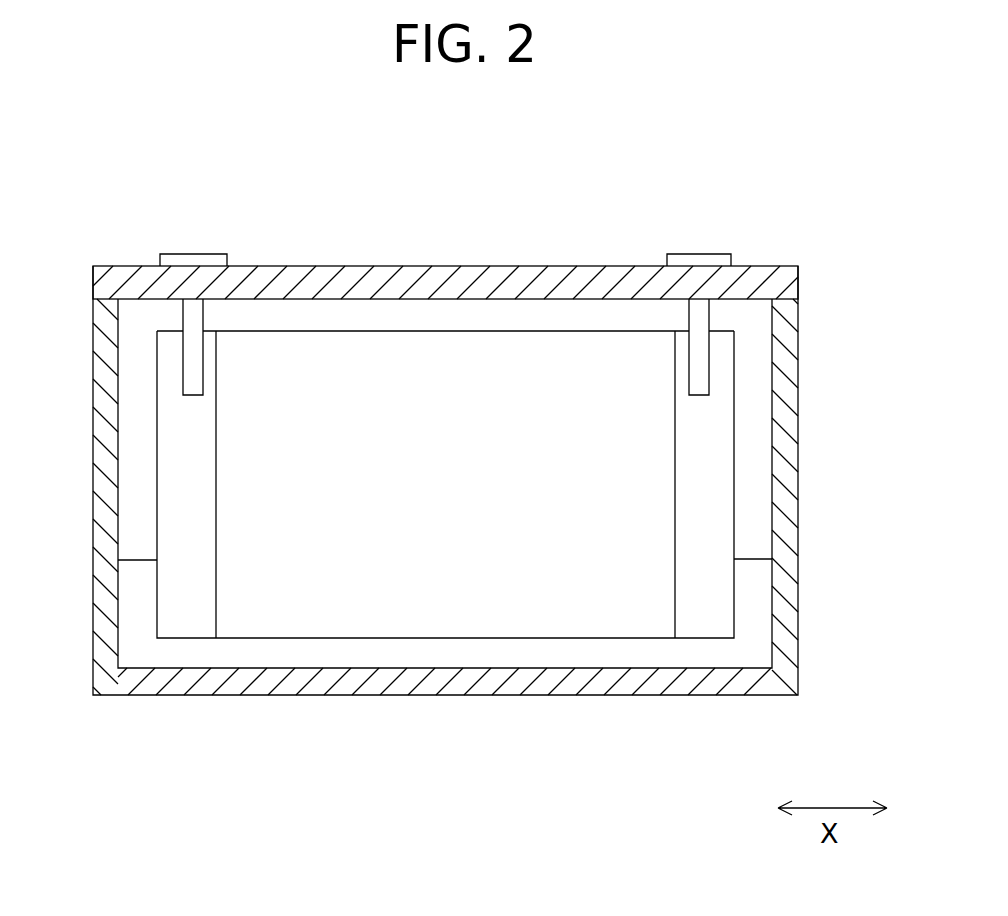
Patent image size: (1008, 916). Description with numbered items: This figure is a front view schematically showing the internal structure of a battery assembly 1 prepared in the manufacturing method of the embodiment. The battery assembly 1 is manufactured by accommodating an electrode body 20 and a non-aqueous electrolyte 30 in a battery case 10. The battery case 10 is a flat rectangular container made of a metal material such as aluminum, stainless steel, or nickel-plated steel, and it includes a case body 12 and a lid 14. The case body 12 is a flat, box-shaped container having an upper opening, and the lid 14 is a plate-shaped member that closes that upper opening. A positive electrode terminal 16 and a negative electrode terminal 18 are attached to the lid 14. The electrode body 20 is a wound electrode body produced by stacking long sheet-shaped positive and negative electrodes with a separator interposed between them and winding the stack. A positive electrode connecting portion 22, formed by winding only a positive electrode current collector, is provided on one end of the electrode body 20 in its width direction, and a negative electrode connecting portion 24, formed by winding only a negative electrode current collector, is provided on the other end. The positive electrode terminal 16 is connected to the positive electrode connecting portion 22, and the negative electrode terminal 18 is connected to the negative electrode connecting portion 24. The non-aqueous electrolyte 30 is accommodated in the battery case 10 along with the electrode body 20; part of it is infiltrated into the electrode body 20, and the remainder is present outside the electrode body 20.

The battery assembly 1 is at (870, 131).
The battery case 10 is at (800, 312).
The case body 12 is at (800, 395).
The lid 14 is at (762, 266).
The positive electrode terminal 16 is at (201, 252).
The negative electrode terminal 18 is at (705, 252).
The electrode body 20 is at (412, 327).
The positive electrode connecting portion 22 is at (192, 618).
The negative electrode connecting portion 24 is at (700, 622).
The non-aqueous electrolyte 30 is at (135, 595).